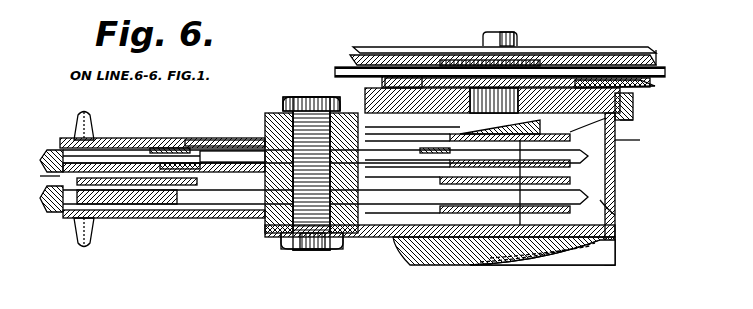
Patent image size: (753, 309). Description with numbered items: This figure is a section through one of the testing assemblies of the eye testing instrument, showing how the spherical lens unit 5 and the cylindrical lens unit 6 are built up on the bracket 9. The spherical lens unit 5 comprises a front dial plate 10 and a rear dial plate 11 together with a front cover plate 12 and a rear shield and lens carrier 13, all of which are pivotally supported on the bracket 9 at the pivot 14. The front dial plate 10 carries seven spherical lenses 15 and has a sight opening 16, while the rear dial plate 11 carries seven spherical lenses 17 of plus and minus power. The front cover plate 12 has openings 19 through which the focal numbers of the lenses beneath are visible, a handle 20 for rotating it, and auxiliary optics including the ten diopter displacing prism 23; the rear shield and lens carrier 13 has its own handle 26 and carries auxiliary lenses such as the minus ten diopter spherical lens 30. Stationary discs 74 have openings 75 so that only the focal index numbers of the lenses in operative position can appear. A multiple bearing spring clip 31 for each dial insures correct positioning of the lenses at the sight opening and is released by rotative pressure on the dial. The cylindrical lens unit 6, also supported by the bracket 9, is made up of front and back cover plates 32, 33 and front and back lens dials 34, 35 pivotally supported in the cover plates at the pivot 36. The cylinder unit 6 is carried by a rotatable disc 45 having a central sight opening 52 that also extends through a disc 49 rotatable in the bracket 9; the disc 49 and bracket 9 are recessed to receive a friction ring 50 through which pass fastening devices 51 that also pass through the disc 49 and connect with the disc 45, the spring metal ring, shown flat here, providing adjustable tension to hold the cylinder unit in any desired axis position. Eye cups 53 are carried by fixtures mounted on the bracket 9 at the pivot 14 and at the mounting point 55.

The spherical lens unit 5 is at (40, 176).
The cylindrical lens unit 6 is at (676, 51).
The bracket 9 is at (635, 106).
The front dial plate 10 is at (45, 158).
The rear dial plate 11 is at (50, 193).
The front cover plate 12 is at (150, 150).
The rear shield and lens carrier 13 is at (168, 212).
The pivot 14 is at (297, 96).
The spherical lenses 15 is at (152, 148).
The sight opening 16 is at (204, 142).
The spherical lenses 17 is at (130, 197).
The openings 19 is at (232, 135).
The handle 20 is at (80, 122).
The ten diopter displacing prism 23 is at (606, 125).
The handle 26 is at (78, 233).
The minus ten diopter spherical lens 30 is at (520, 240).
The multiple bearing spring clip 31 is at (368, 110).
The front cover plate 32 is at (530, 102).
The back cover plate 33 is at (650, 86).
The front lens dial 34 is at (392, 62).
The back lens dial 35 is at (418, 78).
The pivot 36 is at (501, 25).
The rotatable disc 45 is at (612, 52).
The disc 49 is at (596, 52).
The friction ring 50 is at (633, 120).
The fastening devices 51 is at (640, 140).
The central sight opening 52 is at (560, 85).
The eye cups 53 is at (605, 265).
The mounting point 55 is at (612, 205).
The stationary discs 74 is at (452, 127).
The openings 75 is at (195, 160).